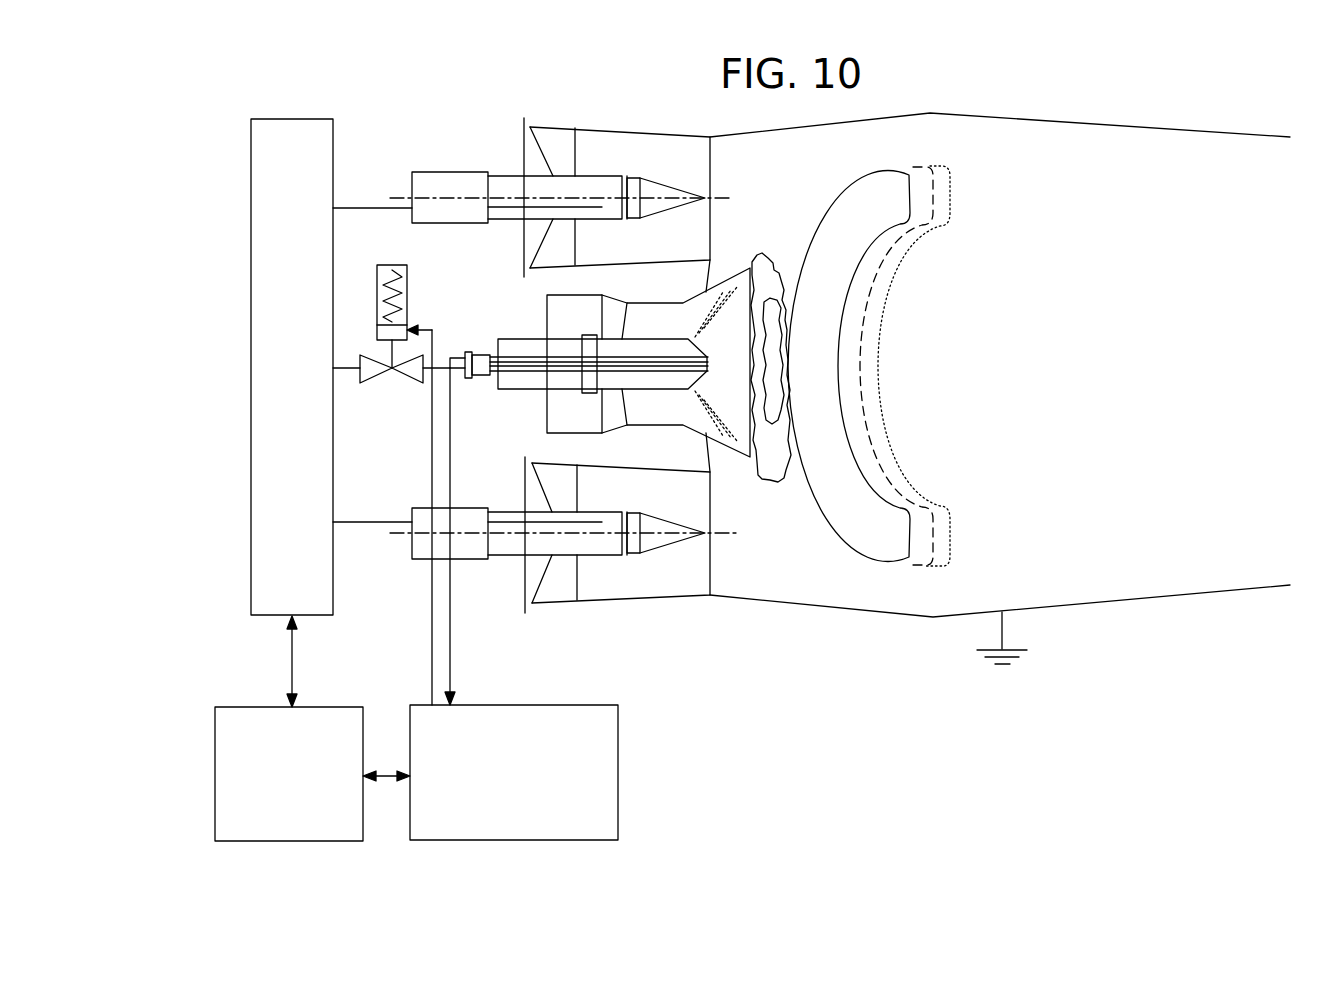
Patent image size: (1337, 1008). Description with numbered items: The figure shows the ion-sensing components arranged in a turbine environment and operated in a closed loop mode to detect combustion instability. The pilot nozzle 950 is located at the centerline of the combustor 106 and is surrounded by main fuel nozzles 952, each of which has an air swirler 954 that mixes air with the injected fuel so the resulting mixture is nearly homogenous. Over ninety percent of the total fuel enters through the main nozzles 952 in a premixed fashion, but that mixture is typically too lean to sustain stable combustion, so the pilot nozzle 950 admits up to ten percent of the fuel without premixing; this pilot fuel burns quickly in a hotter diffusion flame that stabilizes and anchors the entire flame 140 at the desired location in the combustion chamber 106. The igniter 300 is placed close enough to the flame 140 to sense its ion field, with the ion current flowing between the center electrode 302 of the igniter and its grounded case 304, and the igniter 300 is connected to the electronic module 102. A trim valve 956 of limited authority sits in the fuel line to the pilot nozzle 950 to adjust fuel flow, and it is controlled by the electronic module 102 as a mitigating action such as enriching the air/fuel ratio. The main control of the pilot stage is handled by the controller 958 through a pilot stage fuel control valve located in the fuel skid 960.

The fuel skid 960 is at (300, 122).
The air swirler 954 is at (565, 142).
The main fuel nozzle 952 is at (605, 183).
The pilot nozzle 950 is at (652, 303).
The trim valve 956 is at (400, 273).
The igniter 300 is at (473, 353).
The grounded case 304 is at (515, 373).
The center electrode 302 is at (657, 365).
The controller 958 is at (318, 828).
The electronic module 102 is at (577, 828).
The flame 140 is at (933, 271).
The combustor 106 is at (1007, 587).